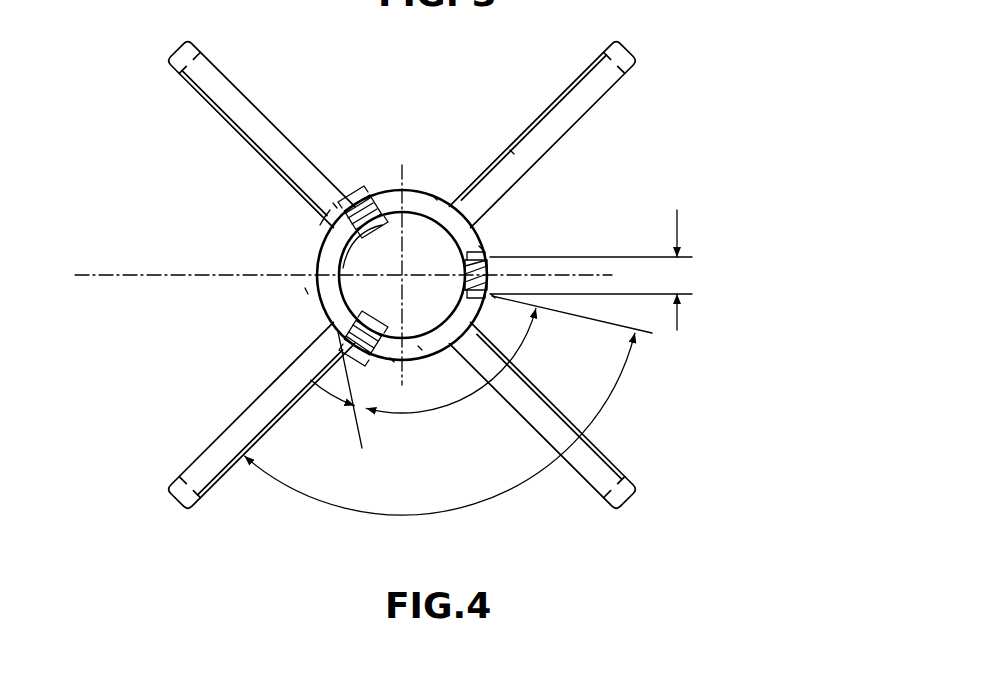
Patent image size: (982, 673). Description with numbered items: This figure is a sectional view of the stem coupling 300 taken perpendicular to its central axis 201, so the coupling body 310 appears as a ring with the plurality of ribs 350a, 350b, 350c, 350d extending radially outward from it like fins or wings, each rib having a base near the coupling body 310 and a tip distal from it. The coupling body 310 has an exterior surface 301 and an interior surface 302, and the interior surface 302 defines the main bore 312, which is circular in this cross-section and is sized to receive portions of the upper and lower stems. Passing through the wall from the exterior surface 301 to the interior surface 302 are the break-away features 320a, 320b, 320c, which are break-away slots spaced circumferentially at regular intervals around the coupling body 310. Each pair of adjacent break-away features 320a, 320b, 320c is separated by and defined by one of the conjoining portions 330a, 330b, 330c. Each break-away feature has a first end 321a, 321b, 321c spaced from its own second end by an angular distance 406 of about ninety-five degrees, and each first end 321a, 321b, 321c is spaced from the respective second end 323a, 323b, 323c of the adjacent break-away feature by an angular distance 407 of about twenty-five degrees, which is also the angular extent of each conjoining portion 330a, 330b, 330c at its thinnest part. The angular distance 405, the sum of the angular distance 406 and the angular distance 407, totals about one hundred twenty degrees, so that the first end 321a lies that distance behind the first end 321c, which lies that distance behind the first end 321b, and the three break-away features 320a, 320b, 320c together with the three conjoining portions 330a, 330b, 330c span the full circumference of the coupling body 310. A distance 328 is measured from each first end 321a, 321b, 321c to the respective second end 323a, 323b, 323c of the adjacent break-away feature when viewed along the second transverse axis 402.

The stem coupling 300 is at (715, 67).
The central axis 201 is at (512, 152).
The exterior surface 301 is at (335, 262).
The interior surface 302 is at (330, 220).
The coupling body 310 is at (422, 198).
The main bore 312 is at (424, 333).
The break-away feature 320a is at (345, 246).
The break-away feature 320b is at (436, 198).
The break-away feature 320c is at (420, 348).
The first end 321a is at (305, 291).
The first end 321b is at (389, 192).
The first end 321c is at (497, 297).
The second end 323a is at (334, 205).
The second end 323b is at (480, 246).
The second end 323c is at (392, 360).
The distance 328 is at (678, 277).
The conjoining portion 330a is at (336, 343).
The conjoining portion 330b is at (368, 198).
The conjoining portion 330c is at (492, 264).
The rib 350a is at (210, 463).
The rib 350b is at (225, 100).
The rib 350c is at (633, 43).
The rib 350d is at (593, 480).
The second transverse axis 402 is at (101, 283).
The angular distance 405 is at (455, 512).
The angular distance 406 is at (477, 393).
The angular distance 407 is at (333, 397).